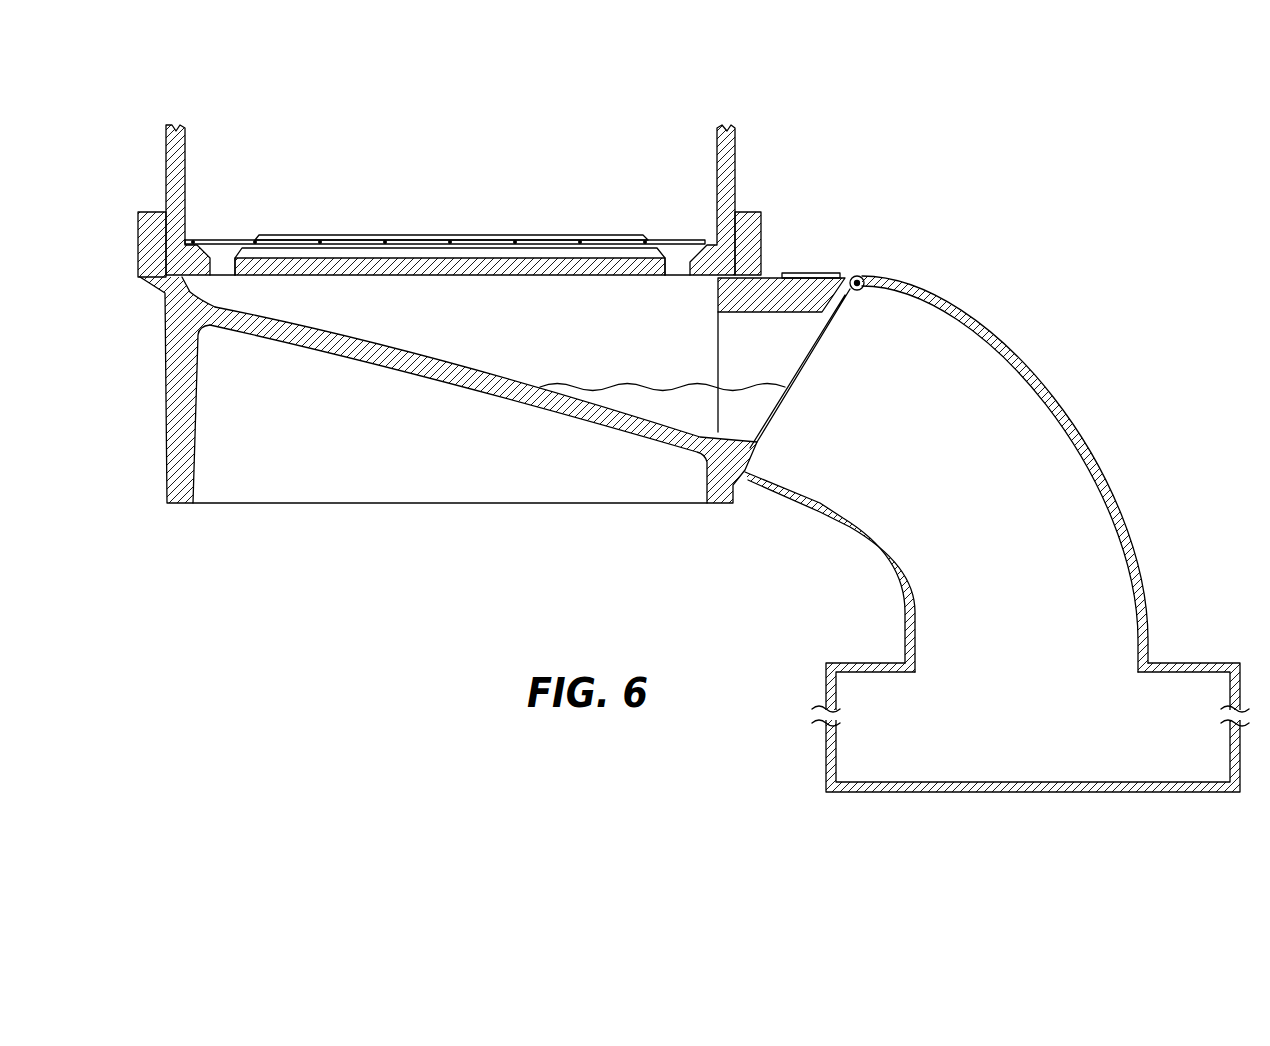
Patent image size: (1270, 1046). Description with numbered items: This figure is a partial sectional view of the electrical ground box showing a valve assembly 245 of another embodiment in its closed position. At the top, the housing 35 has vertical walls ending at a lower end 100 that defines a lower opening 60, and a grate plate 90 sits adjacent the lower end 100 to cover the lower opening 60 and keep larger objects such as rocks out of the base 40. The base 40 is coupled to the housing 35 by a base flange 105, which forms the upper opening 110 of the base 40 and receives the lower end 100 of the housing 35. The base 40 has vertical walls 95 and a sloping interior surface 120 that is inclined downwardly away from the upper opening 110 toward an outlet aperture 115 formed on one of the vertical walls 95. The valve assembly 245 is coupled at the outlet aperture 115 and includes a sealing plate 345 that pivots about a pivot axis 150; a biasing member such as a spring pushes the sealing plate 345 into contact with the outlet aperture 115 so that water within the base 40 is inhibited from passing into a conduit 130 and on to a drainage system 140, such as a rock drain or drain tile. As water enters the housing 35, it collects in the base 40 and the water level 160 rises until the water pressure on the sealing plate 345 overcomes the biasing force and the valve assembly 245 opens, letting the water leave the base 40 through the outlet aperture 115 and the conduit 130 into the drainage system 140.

The housing 35 is at (725, 147).
The base 40 is at (165, 415).
The lower opening 60 is at (668, 228).
The grate plate 90 is at (432, 240).
The vertical walls 95 is at (188, 478).
The lower end 100 is at (203, 240).
The base flange 105 is at (758, 230).
The upper opening 110 is at (355, 213).
The outlet aperture 115 is at (803, 292).
The sloping interior surface 120 is at (485, 370).
The conduit 130 is at (1117, 488).
The drainage system 140 is at (1084, 792).
The pivot axis 150 is at (865, 276).
The water level 160 is at (665, 390).
The valve assembly 245 is at (930, 256).
The sealing plate 345 is at (815, 357).